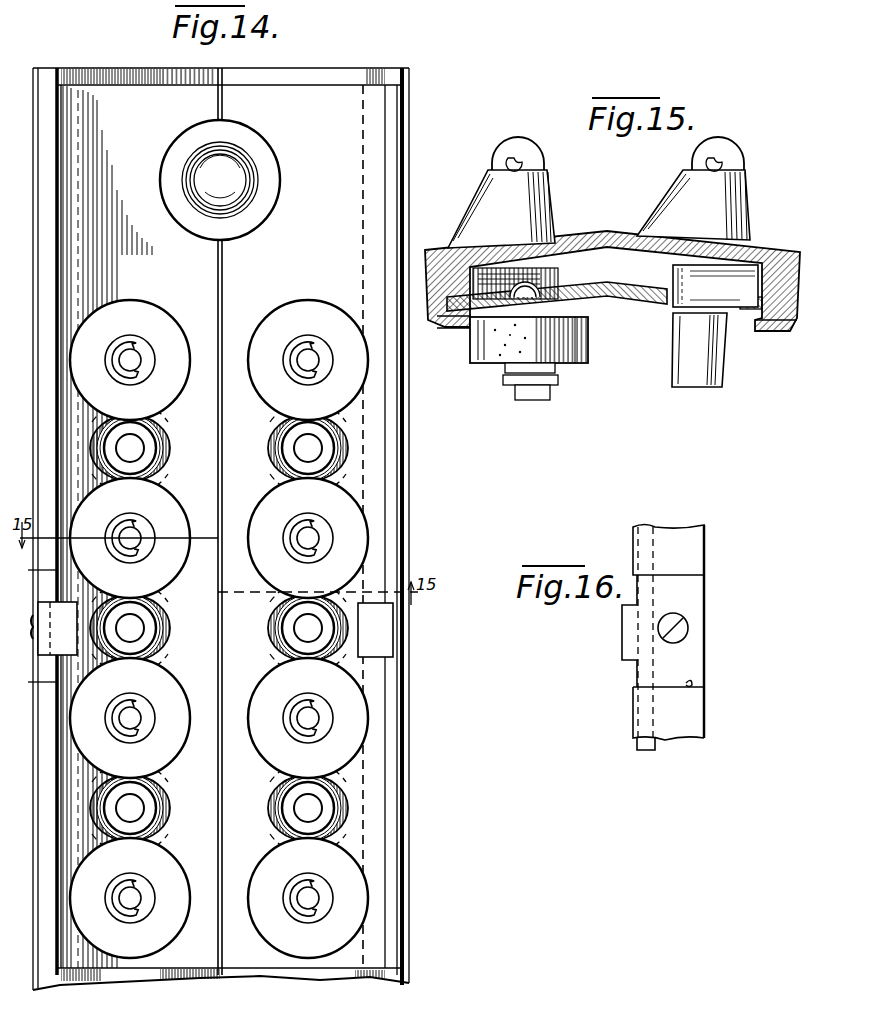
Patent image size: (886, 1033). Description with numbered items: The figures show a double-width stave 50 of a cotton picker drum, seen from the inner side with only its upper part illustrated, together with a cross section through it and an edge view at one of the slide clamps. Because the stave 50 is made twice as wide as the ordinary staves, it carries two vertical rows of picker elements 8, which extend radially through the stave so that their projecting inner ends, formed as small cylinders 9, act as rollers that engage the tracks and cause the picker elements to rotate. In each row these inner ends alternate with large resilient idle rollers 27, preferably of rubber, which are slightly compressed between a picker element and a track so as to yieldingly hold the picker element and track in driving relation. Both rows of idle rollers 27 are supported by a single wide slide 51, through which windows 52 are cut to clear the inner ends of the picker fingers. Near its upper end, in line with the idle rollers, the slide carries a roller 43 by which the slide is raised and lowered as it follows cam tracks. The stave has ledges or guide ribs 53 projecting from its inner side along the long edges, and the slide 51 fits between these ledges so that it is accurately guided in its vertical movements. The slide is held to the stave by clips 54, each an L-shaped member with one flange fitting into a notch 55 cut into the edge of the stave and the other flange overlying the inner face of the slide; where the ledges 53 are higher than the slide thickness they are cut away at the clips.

In FIG. 15, the picker elements 8 is at (540, 160).
In FIG. 14, the small cylinders 9 is at (145, 448).
In FIG. 15, the small cylinders 9 is at (672, 353).
In FIG. 14, the resilient idle rollers 27 is at (132, 305).
In FIG. 15, the resilient idle rollers 27 is at (583, 355).
In FIG. 14, the roller 43 is at (268, 160).
In FIG. 14, the stave 50 is at (138, 80).
In FIG. 15, the stave 50 is at (598, 240).
In FIG. 16, the stave 50 is at (683, 543).
In FIG. 14, the wide slide 51 is at (305, 95).
In FIG. 15, the wide slide 51 is at (635, 307).
In FIG. 16, the wide slide 51 is at (645, 750).
In FIG. 14, the windows 52 is at (268, 460).
In FIG. 14, the ledges or guide ribs 53 is at (50, 72).
In FIG. 15, the ledges or guide ribs 53 is at (418, 133).
In FIG. 16, the ledges or guide ribs 53 is at (633, 718).
In FIG. 14, the clips 54 is at (82, 661).
In FIG. 15, the clips 54 is at (457, 332).
In FIG. 16, the clips 54 is at (690, 652).
In FIG. 15, the notch 55 is at (795, 333).
In FIG. 16, the notch 55 is at (686, 688).